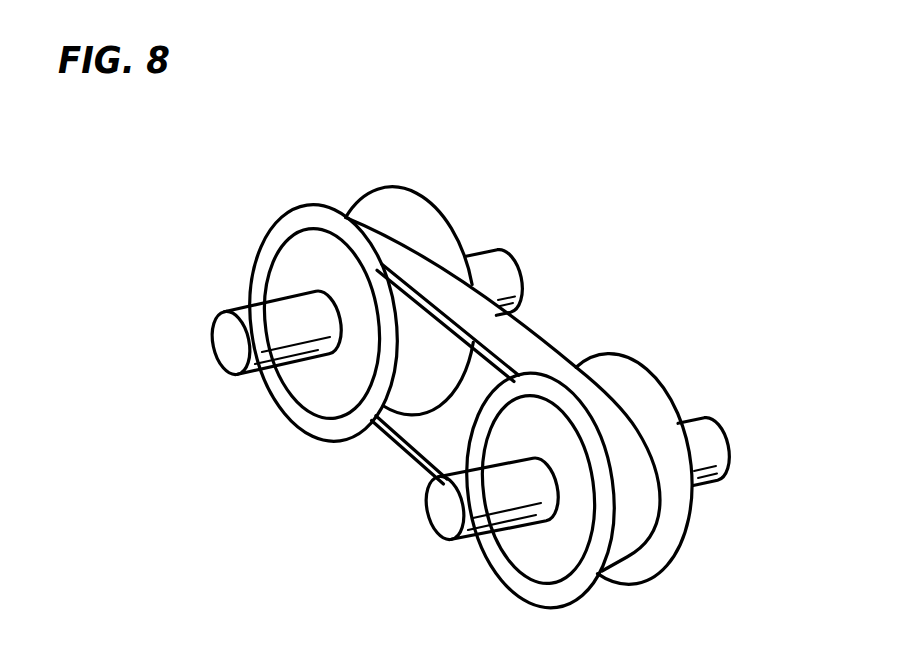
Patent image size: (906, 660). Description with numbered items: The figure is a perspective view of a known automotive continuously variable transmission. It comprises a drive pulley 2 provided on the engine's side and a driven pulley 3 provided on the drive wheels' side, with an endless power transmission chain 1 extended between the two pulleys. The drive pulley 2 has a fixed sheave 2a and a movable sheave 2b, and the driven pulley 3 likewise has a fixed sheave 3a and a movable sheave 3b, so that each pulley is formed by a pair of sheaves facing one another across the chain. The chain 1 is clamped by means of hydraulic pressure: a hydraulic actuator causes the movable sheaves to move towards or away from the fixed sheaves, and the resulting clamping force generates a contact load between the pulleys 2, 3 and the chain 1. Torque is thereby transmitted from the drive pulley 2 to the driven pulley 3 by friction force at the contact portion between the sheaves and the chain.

The endless power transmission chain 1 is at (533, 329).
The drive pulley 2 is at (582, 471).
The fixed sheave 2a is at (633, 381).
The movable sheave 2b is at (524, 546).
The driven pulley 3 is at (365, 304).
The fixed sheave 3a is at (392, 202).
The movable sheave 3b is at (314, 386).